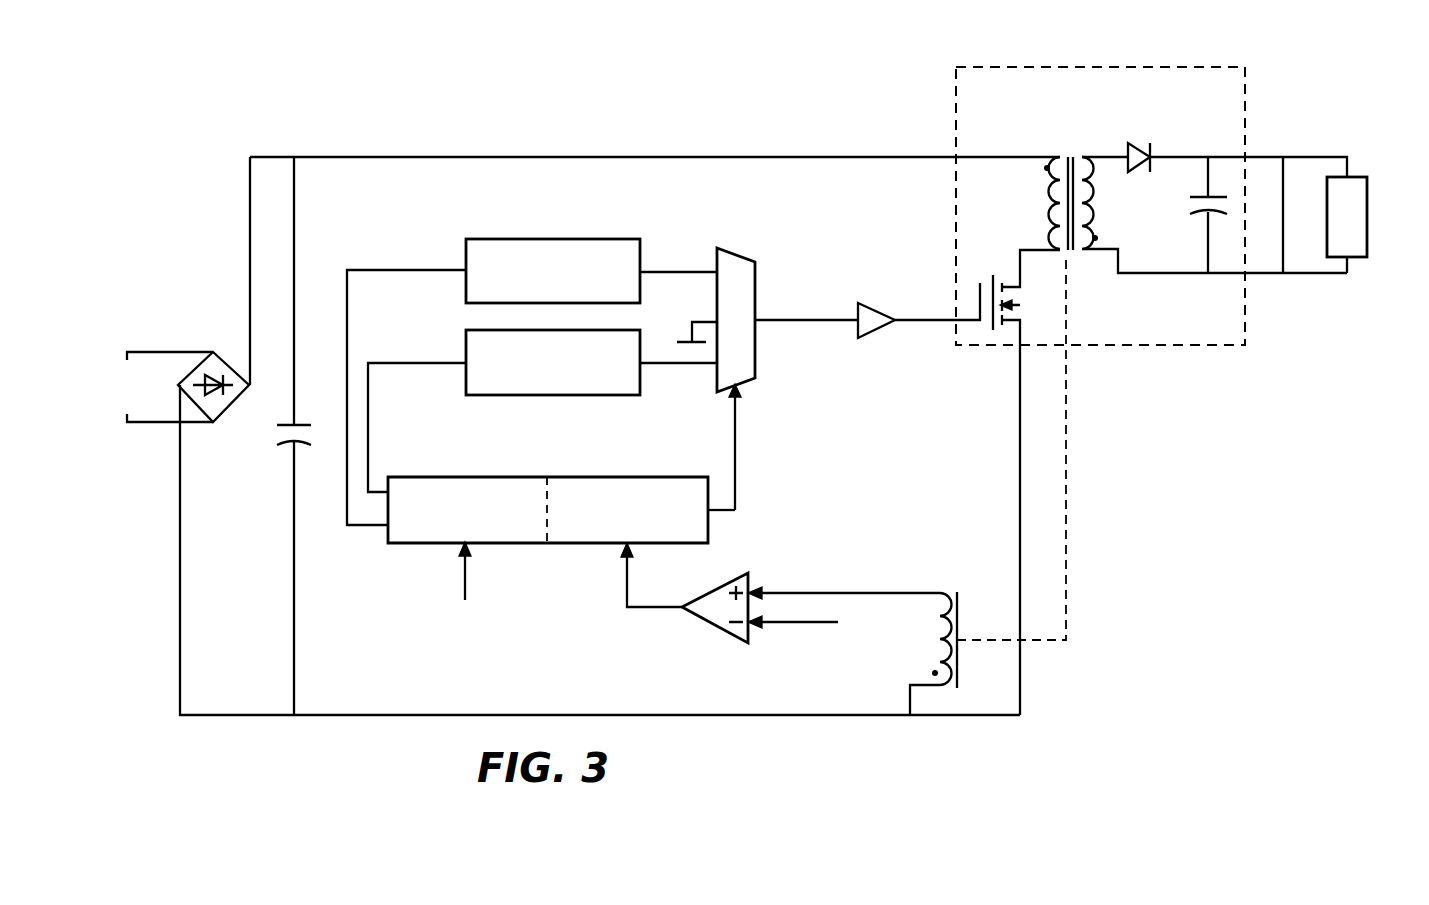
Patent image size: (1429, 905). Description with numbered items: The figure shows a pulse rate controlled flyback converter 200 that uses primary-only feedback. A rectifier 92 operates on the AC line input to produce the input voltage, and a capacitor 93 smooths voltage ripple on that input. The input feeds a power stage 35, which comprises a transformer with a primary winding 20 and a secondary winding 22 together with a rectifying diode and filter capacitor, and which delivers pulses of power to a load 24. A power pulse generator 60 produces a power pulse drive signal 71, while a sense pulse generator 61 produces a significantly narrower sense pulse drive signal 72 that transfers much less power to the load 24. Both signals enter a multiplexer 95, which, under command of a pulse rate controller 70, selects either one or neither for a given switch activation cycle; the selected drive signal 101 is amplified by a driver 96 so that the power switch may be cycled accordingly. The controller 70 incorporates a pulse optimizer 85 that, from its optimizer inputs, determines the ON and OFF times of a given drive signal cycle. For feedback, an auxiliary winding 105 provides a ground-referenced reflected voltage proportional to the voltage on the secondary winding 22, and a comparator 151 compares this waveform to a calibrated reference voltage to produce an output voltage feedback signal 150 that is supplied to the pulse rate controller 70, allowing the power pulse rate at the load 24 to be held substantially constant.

The flyback converter 200 is at (555, 76).
The rectifier 92 is at (192, 310).
The capacitor 93 is at (278, 430).
The power pulse generator 60 is at (575, 239).
The sense pulse generator 61 is at (565, 397).
The power pulse drive signal 71 is at (685, 268).
The sense pulse drive signal 72 is at (685, 366).
The multiplexer 95 is at (733, 250).
The drive signal 101 is at (798, 317).
The driver 96 is at (863, 302).
The pulse optimizer 85 is at (455, 477).
The pulse rate controller 70 is at (708, 528).
The output voltage feedback signal 150 is at (627, 587).
The comparator 151 is at (715, 632).
The auxiliary winding 105 is at (928, 595).
The power stage 35 is at (1215, 67).
The primary winding 20 is at (1055, 158).
The secondary winding 22 is at (1088, 158).
The load 24 is at (1368, 220).